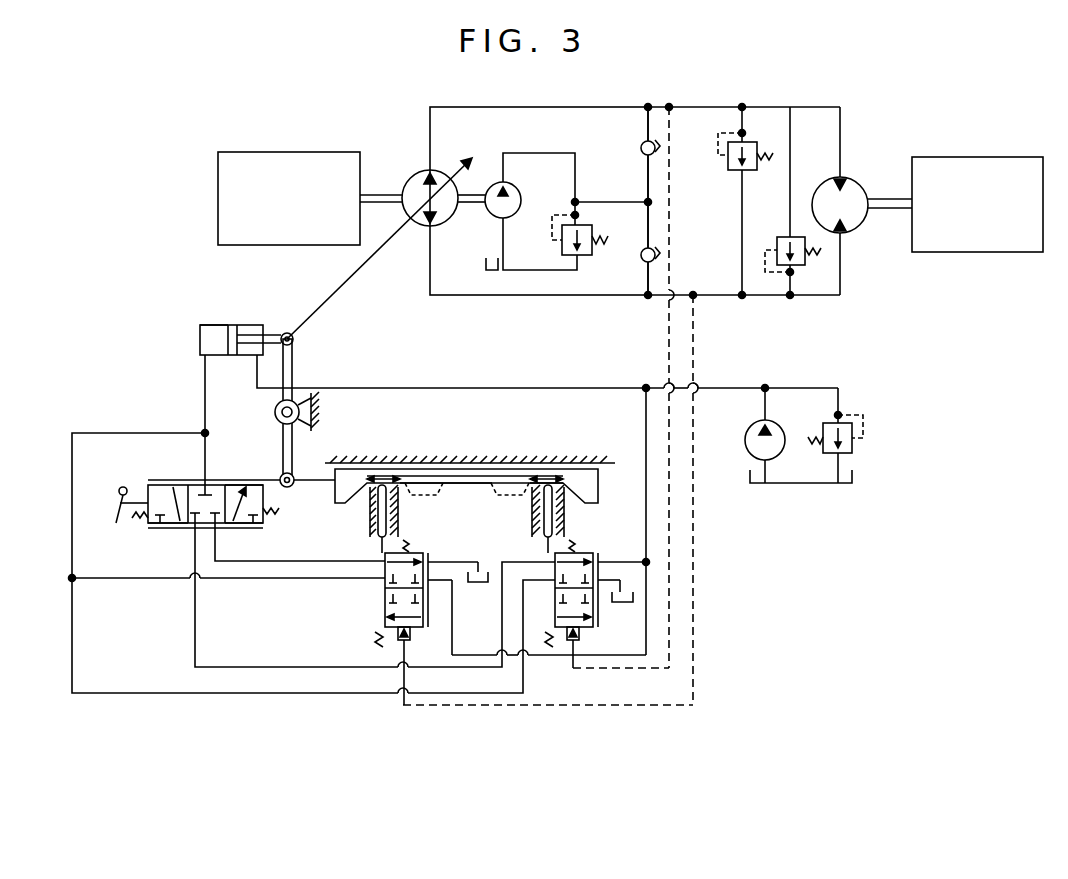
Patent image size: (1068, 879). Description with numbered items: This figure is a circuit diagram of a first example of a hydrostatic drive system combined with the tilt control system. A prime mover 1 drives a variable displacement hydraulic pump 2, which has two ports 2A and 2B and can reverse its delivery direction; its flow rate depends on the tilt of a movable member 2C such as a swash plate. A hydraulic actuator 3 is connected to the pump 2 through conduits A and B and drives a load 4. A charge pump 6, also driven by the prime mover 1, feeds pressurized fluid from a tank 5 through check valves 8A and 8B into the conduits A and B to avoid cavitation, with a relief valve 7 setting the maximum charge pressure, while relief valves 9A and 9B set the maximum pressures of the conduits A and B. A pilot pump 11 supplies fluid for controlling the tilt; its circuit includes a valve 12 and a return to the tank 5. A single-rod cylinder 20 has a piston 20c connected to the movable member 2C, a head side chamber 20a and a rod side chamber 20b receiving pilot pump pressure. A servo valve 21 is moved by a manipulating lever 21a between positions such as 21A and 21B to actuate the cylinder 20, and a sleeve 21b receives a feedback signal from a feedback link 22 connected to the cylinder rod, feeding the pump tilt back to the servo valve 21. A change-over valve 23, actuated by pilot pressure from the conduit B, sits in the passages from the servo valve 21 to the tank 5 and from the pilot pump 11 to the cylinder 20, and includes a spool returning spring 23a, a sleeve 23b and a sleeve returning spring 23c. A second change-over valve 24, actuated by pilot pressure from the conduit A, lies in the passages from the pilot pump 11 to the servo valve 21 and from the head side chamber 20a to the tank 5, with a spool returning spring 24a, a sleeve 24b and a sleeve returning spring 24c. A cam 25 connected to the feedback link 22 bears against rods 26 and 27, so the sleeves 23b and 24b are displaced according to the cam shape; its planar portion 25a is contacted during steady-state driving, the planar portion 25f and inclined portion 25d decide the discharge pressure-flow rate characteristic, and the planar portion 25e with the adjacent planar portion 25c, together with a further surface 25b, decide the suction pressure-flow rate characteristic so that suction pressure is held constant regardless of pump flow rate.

The prime mover 1 is at (338, 152).
The variable displacement hydraulic pump 2 is at (412, 180).
The port 2A is at (437, 171).
The port 2B is at (440, 224).
The movable member 2C is at (382, 268).
The hydraulic actuator 3 is at (855, 191).
The load 4 is at (1012, 157).
The tank 5 is at (486, 271).
The charge pump 6 is at (526, 188).
The relief valve 7 is at (562, 251).
The check valve 8A is at (638, 153).
The check valve 8B is at (640, 263).
The relief valve 9A is at (729, 170).
The relief valve 9B is at (780, 239).
The pilot pump 11 is at (754, 433).
The relief valve 12 is at (852, 454).
The single-rod cylinder 20 is at (220, 325).
The head side chamber 20a is at (200, 341).
The rod side chamber 20b is at (254, 335).
The piston 20c is at (234, 325).
The servo valve 21 is at (144, 485).
The manipulating lever 21a is at (116, 513).
The sleeve 21b is at (244, 482).
The position 21A is at (239, 543).
The position 21B is at (156, 543).
The feedback link 22 is at (283, 436).
The change-over valve 23 is at (383, 607).
The spool returning spring 23a is at (418, 549).
The sleeve 23b is at (372, 544).
The sleeve returning spring 23c is at (382, 646).
The change-over valve 24 is at (602, 626).
The spool returning spring 24a is at (576, 553).
The sleeve 24b is at (539, 544).
The sleeve returning spring 24c is at (543, 663).
The cam 25 is at (598, 490).
The planar portion 25a is at (578, 500).
The cam surface 25b is at (430, 483).
The portion 25c is at (513, 469).
The inclined portion 25d is at (359, 501).
The planar portion 25e is at (560, 477).
The planar portion 25f is at (379, 469).
The rod 26 is at (423, 502).
The rod 27 is at (508, 503).
The conduit A is at (544, 108).
The conduit B is at (585, 295).